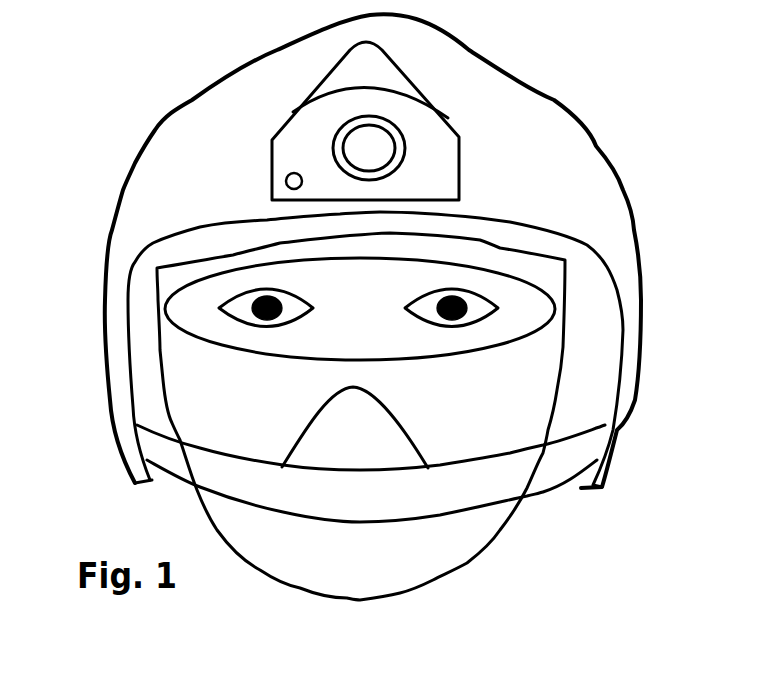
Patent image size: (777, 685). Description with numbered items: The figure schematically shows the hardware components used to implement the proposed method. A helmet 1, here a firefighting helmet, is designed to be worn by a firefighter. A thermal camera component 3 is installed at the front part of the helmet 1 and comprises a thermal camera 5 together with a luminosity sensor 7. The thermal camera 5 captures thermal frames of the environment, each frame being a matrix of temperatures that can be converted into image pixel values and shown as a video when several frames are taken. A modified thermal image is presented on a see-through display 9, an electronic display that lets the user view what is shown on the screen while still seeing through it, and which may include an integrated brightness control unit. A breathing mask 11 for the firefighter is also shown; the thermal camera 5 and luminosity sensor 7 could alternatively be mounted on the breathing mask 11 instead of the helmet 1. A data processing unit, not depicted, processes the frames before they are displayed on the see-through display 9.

The helmet 1 is at (165, 145).
The thermal camera component 3 is at (442, 167).
The thermal camera 5 is at (333, 144).
The luminosity sensor 7 is at (285, 181).
The see-through display 9 is at (554, 309).
The breathing mask 11 is at (487, 527).